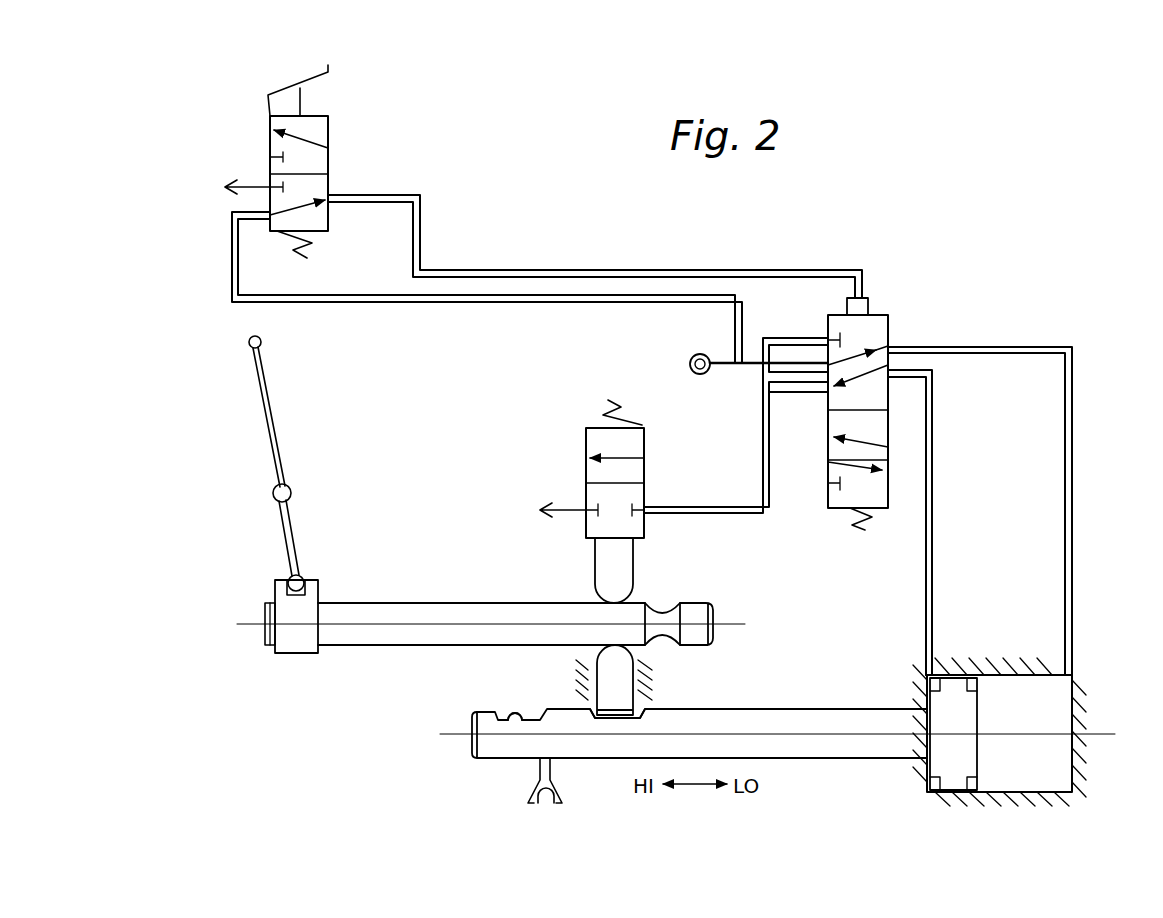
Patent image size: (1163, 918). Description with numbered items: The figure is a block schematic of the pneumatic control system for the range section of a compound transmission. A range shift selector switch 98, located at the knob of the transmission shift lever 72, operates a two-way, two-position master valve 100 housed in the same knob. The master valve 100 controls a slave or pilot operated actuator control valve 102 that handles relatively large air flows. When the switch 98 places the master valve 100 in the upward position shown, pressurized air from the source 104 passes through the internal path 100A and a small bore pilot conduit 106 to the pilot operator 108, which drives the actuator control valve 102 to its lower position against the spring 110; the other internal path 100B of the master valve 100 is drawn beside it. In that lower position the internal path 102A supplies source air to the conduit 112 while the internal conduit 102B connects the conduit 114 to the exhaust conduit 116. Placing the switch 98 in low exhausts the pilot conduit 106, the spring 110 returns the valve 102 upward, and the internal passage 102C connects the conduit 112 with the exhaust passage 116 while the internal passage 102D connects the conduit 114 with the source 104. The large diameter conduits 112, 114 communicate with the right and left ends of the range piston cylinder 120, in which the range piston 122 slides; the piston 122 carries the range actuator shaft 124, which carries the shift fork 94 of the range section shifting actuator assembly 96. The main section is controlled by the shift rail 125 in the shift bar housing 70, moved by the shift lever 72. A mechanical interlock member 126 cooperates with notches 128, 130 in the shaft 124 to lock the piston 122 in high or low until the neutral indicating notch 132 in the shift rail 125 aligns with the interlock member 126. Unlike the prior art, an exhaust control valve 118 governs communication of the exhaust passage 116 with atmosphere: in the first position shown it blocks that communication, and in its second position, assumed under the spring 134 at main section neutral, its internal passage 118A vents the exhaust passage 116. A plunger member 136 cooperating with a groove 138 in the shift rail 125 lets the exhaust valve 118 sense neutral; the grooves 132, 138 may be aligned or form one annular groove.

The shift bar housing 70 is at (398, 660).
The transmission shift lever 72 is at (270, 388).
The shift fork 94 is at (553, 775).
The range section shifting actuator assembly 96 is at (1097, 680).
The range shift selector switch 98 is at (264, 110).
The master valve 100 is at (332, 157).
The internal path 100A is at (317, 202).
The valve passage (high) 100B is at (312, 138).
The pilot operated actuator control valve 102 is at (892, 321).
The internal path 102A is at (860, 353).
The internal conduit 102B is at (867, 377).
The internal passage 102C is at (865, 440).
The internal passage 102D is at (865, 468).
The source of pressurized fluid 104 is at (690, 363).
The pilot conduit 106 is at (600, 270).
The pilot operator 108 is at (863, 305).
The spring 110 is at (851, 528).
The conduit 112 is at (1072, 557).
The conduit 114 is at (932, 545).
The exhaust conduit 116 is at (707, 507).
The exhaust control valve 118 is at (644, 437).
The internal passage 118A is at (634, 458).
The range piston cylinder 120 is at (999, 671).
The range piston 122 is at (977, 712).
The range actuator shaft 124 is at (707, 725).
The shift rail 125 is at (440, 615).
The mechanical interlock member 126 is at (612, 690).
The notch 128 is at (622, 720).
The notch 130 is at (520, 720).
The neutral indicating notch 132 is at (667, 640).
The spring 134 is at (613, 407).
The plunger member 136 is at (595, 572).
The groove 138 is at (647, 603).